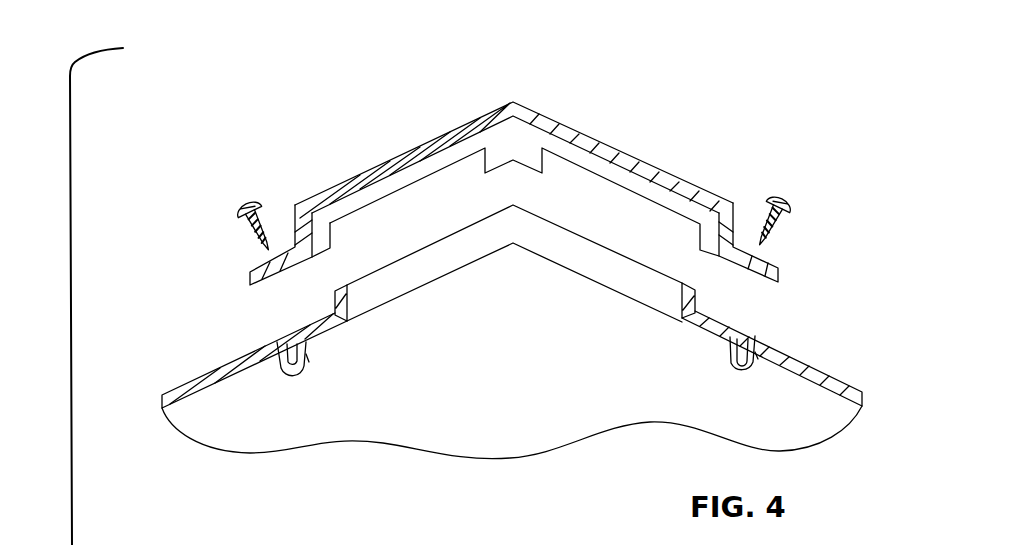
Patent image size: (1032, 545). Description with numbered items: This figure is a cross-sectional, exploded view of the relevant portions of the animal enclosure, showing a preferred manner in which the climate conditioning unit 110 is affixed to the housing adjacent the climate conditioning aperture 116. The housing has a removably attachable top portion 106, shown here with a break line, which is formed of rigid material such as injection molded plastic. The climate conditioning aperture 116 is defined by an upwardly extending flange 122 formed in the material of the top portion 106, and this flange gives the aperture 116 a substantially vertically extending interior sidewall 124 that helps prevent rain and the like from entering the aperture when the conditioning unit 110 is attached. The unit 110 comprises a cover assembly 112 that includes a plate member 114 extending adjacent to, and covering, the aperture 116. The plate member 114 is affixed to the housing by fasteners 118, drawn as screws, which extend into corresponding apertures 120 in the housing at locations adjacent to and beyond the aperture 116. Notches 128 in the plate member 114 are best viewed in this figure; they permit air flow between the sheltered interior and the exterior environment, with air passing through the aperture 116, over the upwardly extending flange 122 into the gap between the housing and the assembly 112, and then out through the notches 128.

The top portion 106 is at (833, 357).
The unit 110 is at (336, 99).
The cover assembly 112 is at (742, 192).
The plate member 114 is at (373, 168).
The climate conditioning aperture 116 is at (533, 315).
The fasteners 118 is at (240, 202).
The apertures 120 is at (307, 362).
The upwardly extending flange 122 is at (695, 293).
The interior sidewall 124 is at (577, 250).
The notches 128 is at (370, 197).